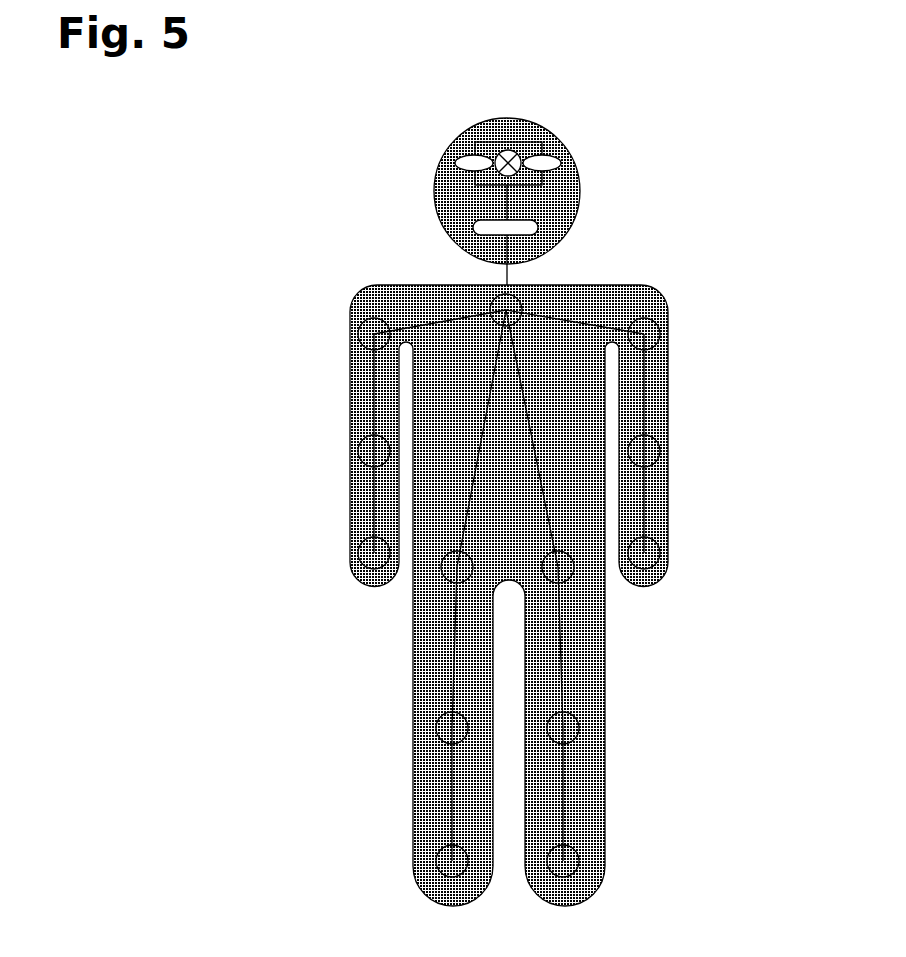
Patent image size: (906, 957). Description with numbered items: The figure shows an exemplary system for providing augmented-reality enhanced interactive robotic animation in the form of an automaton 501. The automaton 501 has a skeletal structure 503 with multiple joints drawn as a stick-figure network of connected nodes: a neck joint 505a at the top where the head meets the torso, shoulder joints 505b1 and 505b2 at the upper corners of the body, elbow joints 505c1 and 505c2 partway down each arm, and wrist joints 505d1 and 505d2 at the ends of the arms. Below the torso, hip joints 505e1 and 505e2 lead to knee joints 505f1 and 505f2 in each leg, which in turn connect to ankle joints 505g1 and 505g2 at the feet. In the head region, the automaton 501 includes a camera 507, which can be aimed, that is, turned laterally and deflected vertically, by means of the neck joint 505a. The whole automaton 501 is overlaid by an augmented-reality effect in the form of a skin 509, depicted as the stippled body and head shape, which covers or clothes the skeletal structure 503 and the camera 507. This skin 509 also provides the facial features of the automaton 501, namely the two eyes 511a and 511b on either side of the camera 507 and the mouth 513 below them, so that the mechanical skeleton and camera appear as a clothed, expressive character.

The automaton 501 is at (610, 114).
The skeletal structure 503 is at (516, 343).
The neck joint 505a is at (502, 312).
The shoulder joint 505b1 is at (372, 336).
The shoulder joint 505b2 is at (646, 336).
The elbow joint 505c1 is at (370, 449).
The elbow joint 505c2 is at (646, 452).
The wrist joint 505d1 is at (370, 551).
The wrist joint 505d2 is at (646, 554).
The hip joint 505e1 is at (455, 569).
The hip joint 505e2 is at (560, 569).
The knee joint 505f1 is at (450, 730).
The knee joint 505f2 is at (565, 730).
The ankle joint 505g1 is at (450, 862).
The ankle joint 505g2 is at (565, 862).
The camera 507 is at (510, 142).
The skin 509 is at (565, 216).
The eye 511a is at (456, 164).
The eye 511b is at (562, 165).
The mouth 513 is at (474, 229).